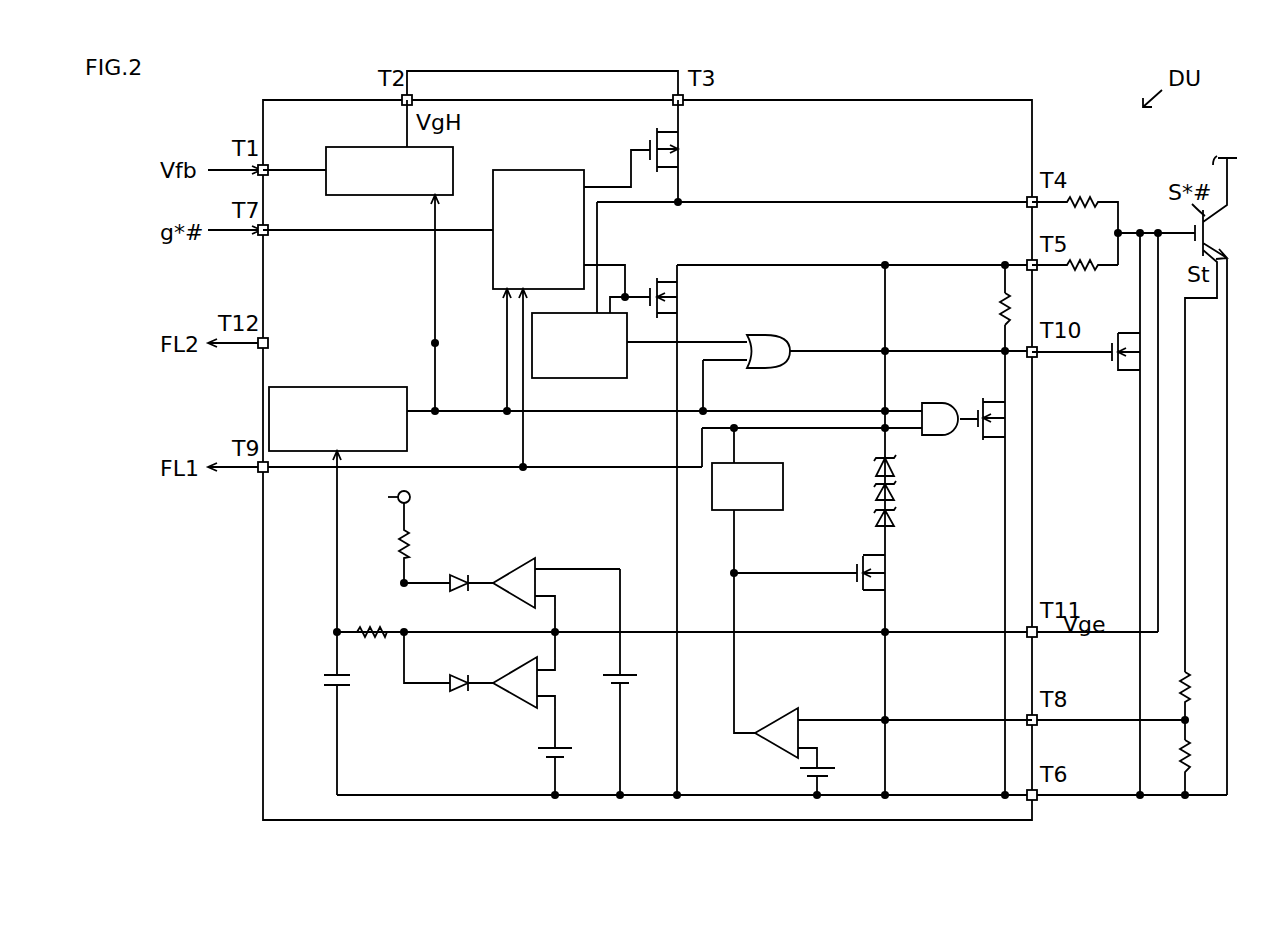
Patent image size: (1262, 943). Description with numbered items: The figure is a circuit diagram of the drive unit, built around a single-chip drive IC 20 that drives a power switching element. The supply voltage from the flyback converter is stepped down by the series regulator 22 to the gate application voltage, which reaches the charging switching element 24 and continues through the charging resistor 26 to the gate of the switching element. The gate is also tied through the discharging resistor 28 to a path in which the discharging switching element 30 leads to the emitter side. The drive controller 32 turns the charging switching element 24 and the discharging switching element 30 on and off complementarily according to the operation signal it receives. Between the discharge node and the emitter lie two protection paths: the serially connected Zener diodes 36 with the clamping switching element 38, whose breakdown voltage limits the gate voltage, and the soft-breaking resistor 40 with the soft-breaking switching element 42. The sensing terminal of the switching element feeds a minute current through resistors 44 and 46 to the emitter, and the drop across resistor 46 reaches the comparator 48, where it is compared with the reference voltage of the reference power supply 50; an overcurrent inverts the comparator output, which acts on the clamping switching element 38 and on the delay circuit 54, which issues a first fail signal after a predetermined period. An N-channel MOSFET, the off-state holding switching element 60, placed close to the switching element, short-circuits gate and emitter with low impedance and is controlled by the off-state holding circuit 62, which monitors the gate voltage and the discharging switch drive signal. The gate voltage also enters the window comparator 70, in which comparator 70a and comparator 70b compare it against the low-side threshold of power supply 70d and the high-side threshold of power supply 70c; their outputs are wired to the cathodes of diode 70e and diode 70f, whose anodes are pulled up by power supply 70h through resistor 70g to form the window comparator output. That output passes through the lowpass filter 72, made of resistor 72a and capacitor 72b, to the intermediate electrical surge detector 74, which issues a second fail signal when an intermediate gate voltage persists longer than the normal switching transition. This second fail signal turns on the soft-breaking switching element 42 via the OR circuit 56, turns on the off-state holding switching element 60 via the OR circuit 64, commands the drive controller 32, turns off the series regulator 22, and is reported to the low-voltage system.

The drive IC 20 is at (953, 90).
The series regulator 22 is at (453, 160).
The charging switching element 24 is at (664, 131).
The charging resistor 26 is at (1090, 199).
The discharging resistor 28 is at (1082, 280).
The discharging switching element 30 is at (664, 280).
The drive controller 32 is at (566, 170).
The Zener diodes 36 is at (918, 492).
The clamping switching element 38 is at (863, 595).
The soft-breaking resistor 40 is at (1000, 312).
The soft-breaking switching element 42 is at (985, 400).
The resistor 44 is at (1183, 682).
The resistor 46 is at (1183, 752).
The comparator 48 is at (765, 716).
The reference power supply 50 is at (826, 768).
The delay circuit 54 is at (772, 511).
The OR circuit 56 is at (934, 403).
The off-state holding switching element 60 is at (1124, 336).
The off-state holding circuit 62 is at (600, 378).
The OR circuit 64 is at (770, 338).
The window comparator 70 is at (501, 531).
The comparator 70a is at (517, 609).
The comparator 70b is at (509, 707).
The power supply 70c is at (570, 748).
The power supply 70d is at (638, 675).
The diode 70e is at (457, 592).
The diode 70f is at (446, 690).
The resistor 70g is at (410, 544).
The power supply 70h is at (410, 497).
The lowpass filter 72 is at (320, 629).
The resistor 72a is at (358, 628).
The capacitor 72b is at (326, 675).
The intermediate electrical surge detector 74 is at (355, 387).